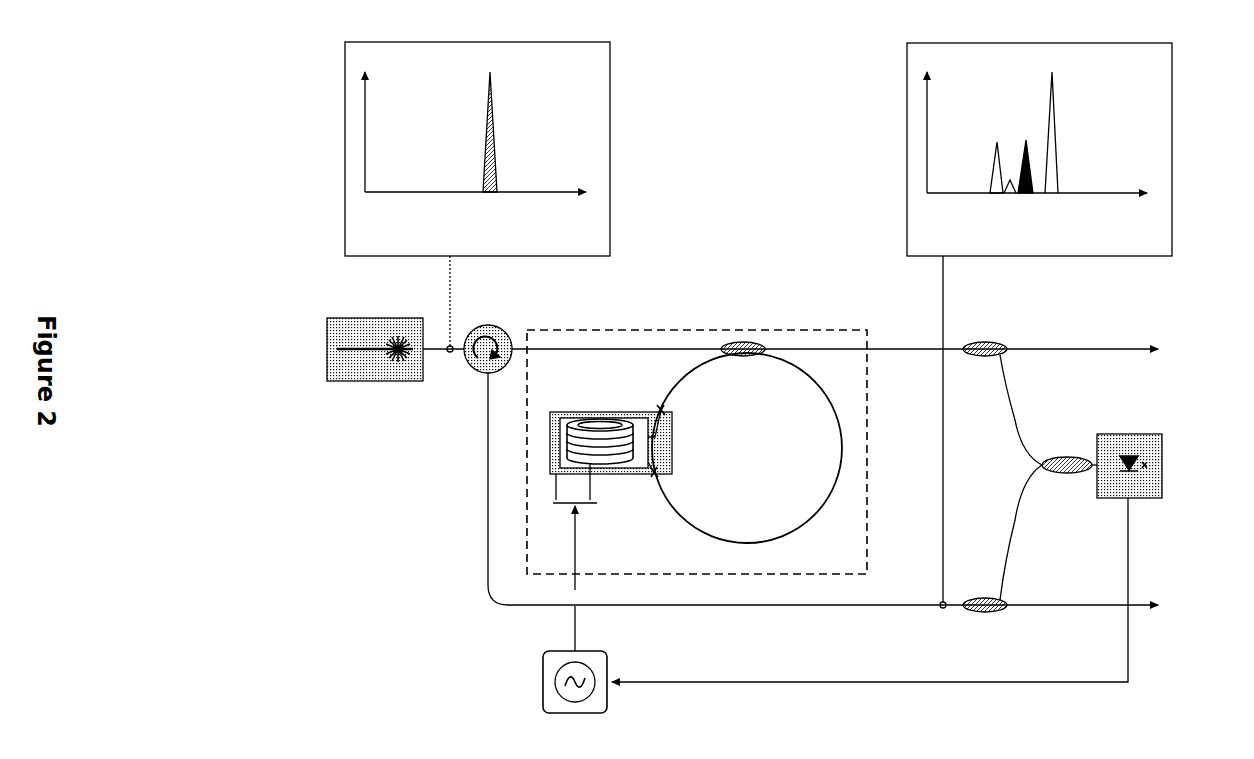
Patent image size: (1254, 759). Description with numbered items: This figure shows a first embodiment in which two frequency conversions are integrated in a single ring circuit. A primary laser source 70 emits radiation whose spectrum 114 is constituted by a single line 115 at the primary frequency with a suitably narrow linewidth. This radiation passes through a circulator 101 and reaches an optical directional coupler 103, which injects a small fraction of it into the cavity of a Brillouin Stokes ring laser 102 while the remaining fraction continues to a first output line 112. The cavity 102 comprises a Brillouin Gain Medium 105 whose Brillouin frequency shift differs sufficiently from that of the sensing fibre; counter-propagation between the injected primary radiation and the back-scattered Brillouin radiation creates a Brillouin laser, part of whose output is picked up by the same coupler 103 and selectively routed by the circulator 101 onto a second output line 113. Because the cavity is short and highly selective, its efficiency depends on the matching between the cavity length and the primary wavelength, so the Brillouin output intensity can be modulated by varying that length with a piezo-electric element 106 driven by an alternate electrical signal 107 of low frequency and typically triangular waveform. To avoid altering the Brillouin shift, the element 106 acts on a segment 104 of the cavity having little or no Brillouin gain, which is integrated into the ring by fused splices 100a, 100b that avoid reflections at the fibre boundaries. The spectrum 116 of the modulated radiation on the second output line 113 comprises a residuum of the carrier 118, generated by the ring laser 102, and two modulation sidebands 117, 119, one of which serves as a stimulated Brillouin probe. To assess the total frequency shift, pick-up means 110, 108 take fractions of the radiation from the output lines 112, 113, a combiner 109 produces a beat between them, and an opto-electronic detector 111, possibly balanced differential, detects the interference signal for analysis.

The primary laser source 70 is at (330, 385).
The circulator 101 is at (496, 326).
The Brillouin Stokes ring laser 102 is at (868, 450).
The optical directional coupler 103 is at (757, 358).
The segment of the cavity 104 is at (673, 445).
The Brillouin Gain Medium 105 is at (812, 520).
The piezo-electric element 106 is at (616, 474).
The alternate electrical signal 107 is at (542, 676).
The pick-up means 108 is at (980, 612).
The combiner 109 is at (1062, 477).
The pick-up means 110 is at (1012, 349).
The opto-electronic detector 111 is at (1124, 433).
The first output line 112 is at (1165, 346).
The second output line 113 is at (1165, 604).
The spectrum of the primary laser source 114 is at (421, 258).
The line 115 is at (494, 118).
The spectrum of the modulated radiation 116 is at (1062, 257).
The modulation sideband 117 is at (997, 140).
The residuum of the carrier 118 is at (1007, 175).
The modulation sideband 119 is at (1027, 140).
The fused splice 100a is at (657, 478).
The fused splice 100b is at (667, 412).